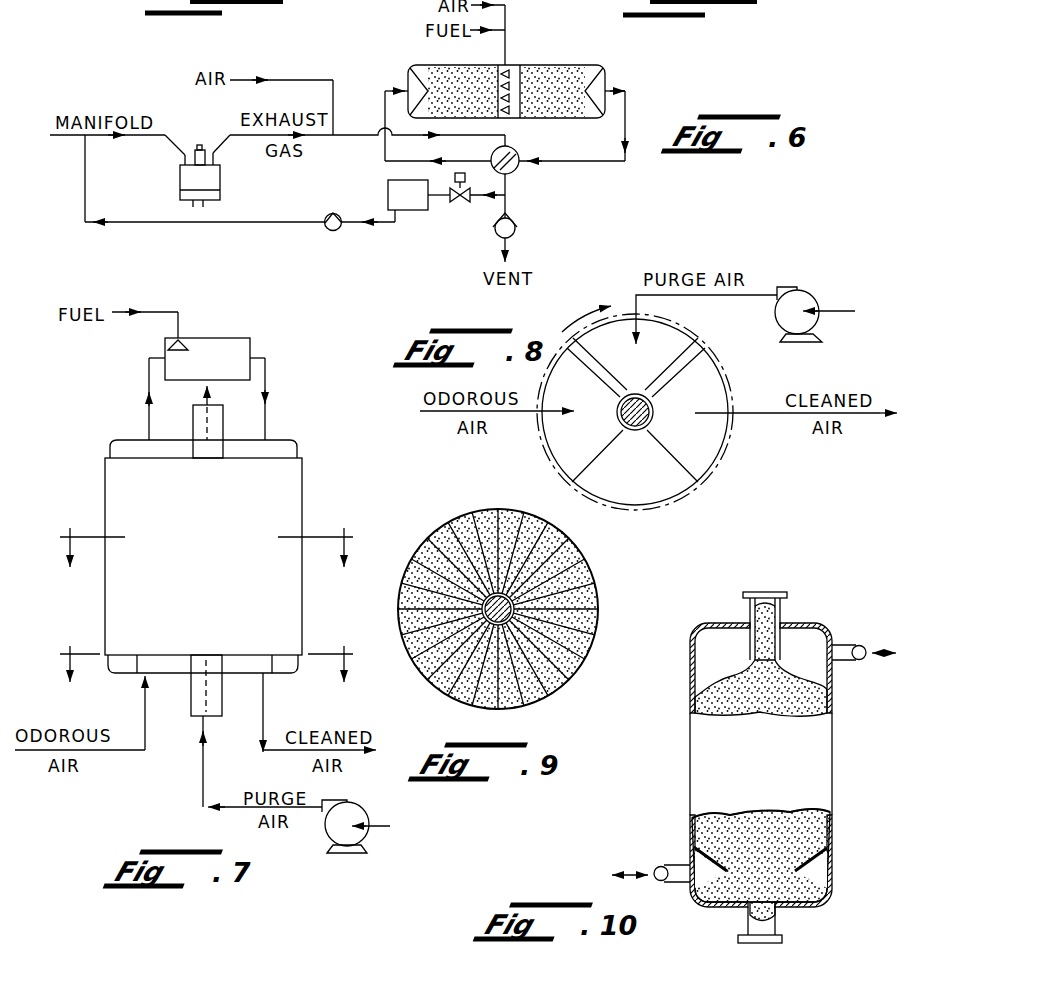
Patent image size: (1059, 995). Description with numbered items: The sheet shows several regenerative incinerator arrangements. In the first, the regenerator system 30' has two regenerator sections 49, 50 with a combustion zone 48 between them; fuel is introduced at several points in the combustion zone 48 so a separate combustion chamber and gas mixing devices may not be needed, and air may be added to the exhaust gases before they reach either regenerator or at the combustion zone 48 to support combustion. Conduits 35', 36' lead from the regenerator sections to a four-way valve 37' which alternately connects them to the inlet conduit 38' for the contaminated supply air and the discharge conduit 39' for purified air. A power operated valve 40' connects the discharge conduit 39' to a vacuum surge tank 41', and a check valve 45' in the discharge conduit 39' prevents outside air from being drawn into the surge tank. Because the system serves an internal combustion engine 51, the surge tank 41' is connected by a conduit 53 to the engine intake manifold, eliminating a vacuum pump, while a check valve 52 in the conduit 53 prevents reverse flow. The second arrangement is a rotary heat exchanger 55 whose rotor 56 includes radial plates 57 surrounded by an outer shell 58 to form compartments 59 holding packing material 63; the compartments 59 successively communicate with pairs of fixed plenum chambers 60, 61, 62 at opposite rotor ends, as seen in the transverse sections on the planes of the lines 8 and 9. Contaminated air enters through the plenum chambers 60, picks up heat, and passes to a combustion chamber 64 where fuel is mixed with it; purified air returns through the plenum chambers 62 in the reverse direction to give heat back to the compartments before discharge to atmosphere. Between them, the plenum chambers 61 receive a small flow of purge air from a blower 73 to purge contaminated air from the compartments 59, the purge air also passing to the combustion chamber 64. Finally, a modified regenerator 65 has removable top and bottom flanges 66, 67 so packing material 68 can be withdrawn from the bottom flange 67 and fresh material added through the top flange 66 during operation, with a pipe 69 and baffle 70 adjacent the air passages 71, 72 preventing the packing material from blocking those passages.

In FIG. 6, the regenerator system 30' is at (534, 69).
In FIG. 6, the conduit 35' is at (415, 143).
In FIG. 6, the conduit 36' is at (594, 126).
In FIG. 6, the four-way valve 37' is at (526, 150).
In FIG. 6, the inlet conduit 38' is at (359, 152).
In FIG. 6, the discharge conduit 39' is at (518, 196).
In FIG. 6, the power operated valve 40' is at (451, 207).
In FIG. 6, the vacuum surge tank 41' is at (384, 215).
In FIG. 6, the check valve 45' is at (529, 237).
In FIG. 6, the combustion zone 48 is at (517, 70).
In FIG. 6, the regenerator section 49 is at (410, 66).
In FIG. 6, the regenerator section 50 is at (577, 67).
In FIG. 6, the internal combustion engine 51 is at (178, 178).
In FIG. 6, the check valve 52 is at (334, 232).
In FIG. 6, the conduit 53 is at (242, 225).
In FIG. 7, the rotary heat exchanger 55 is at (188, 559).
In FIG. 7, the rotor 56 is at (300, 483).
In FIG. 9, the rotor 56 is at (522, 591).
In FIG. 9, the radial plates 57 is at (575, 578).
In FIG. 7, the outer shell 58 is at (299, 630).
In FIG. 9, the outer shell 58 is at (597, 637).
In FIG. 9, the compartments 59 is at (573, 567).
In FIG. 7, the plenum chamber 60 is at (123, 440).
In FIG. 8, the plenum chamber 60 is at (553, 444).
In FIG. 8, the plenum chamber 61 is at (672, 321).
In FIG. 7, the plenum chamber 62 is at (280, 442).
In FIG. 8, the plenum chamber 62 is at (715, 373).
In FIG. 9, the packing material 63 is at (578, 667).
In FIG. 7, the combustion chamber 64 is at (235, 343).
In FIG. 10, the regenerator 65 is at (754, 763).
In FIG. 10, the top flange 66 is at (783, 592).
In FIG. 10, the bottom flange 67 is at (745, 940).
In FIG. 10, the packing material 68 is at (711, 697).
In FIG. 10, the pipe 69 is at (750, 648).
In FIG. 10, the baffle 70 is at (718, 848).
In FIG. 10, the air passage 71 is at (851, 643).
In FIG. 10, the air passage 72 is at (672, 863).
In FIG. 7, the blower 73 is at (370, 838).
In FIG. 8, the blower 73 is at (815, 295).
In FIG. 7, the section line 8— 8 is at (201, 684).
In FIG. 7, the section line 9— 9 is at (206, 562).